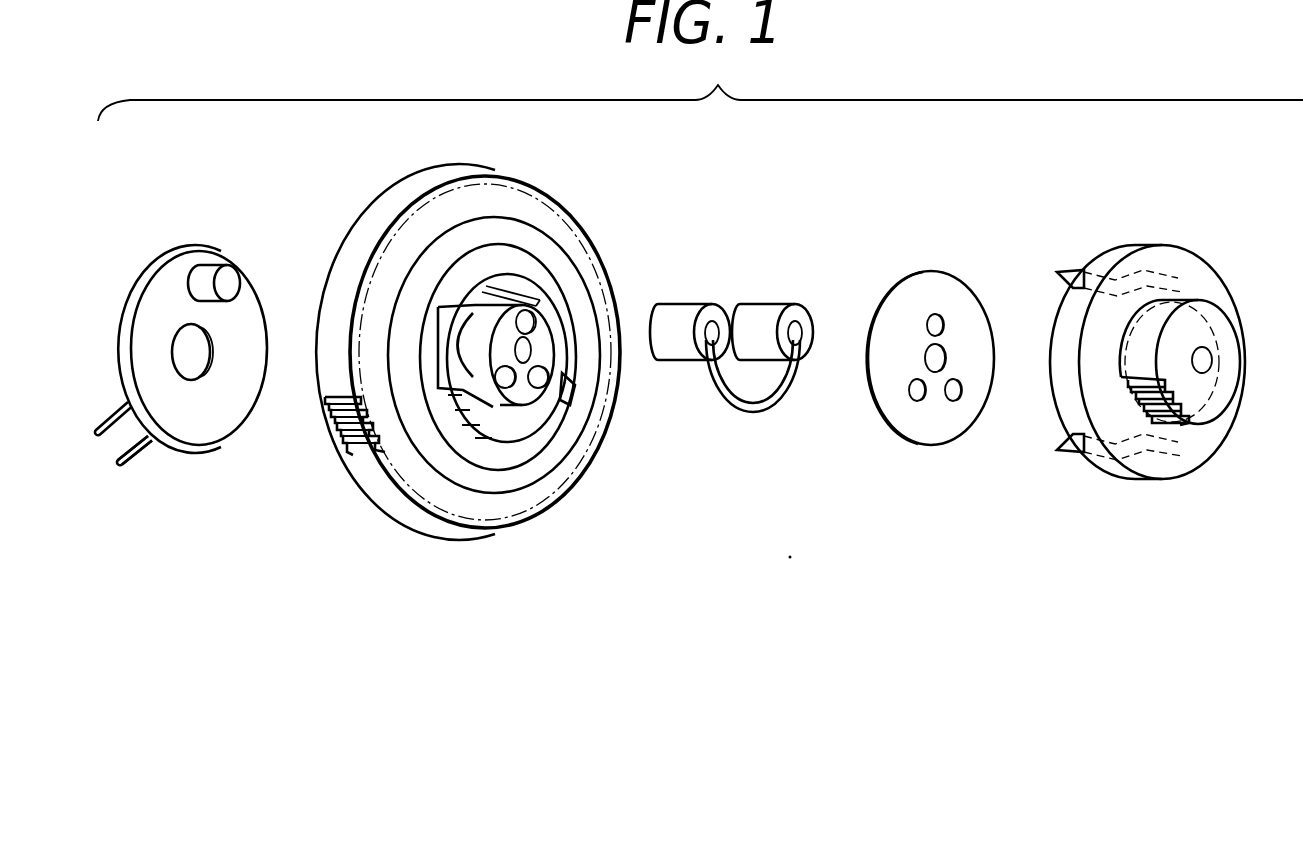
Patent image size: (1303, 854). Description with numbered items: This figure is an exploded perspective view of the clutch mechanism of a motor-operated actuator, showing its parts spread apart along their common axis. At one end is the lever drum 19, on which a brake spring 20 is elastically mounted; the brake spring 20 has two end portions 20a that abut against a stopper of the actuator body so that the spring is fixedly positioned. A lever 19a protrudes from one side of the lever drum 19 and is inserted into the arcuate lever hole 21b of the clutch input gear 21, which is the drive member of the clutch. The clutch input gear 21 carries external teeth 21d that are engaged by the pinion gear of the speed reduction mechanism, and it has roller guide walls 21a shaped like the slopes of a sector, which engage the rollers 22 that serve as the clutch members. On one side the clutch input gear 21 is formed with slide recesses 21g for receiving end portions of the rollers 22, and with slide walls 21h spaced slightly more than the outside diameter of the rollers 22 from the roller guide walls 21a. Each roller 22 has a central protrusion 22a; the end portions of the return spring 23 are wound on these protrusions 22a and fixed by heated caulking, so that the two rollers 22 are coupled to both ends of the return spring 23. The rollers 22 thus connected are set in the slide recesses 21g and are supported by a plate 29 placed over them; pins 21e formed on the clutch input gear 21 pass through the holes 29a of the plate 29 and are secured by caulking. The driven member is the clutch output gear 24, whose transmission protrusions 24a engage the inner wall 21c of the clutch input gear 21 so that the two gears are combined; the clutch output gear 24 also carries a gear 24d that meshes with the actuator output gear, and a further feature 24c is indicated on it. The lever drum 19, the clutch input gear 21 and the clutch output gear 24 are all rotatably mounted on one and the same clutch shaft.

The lever drum 19 is at (240, 402).
The lever 19a is at (228, 283).
The brake spring 20 is at (205, 447).
The end portions 20a is at (140, 462).
The clutch input gear 21 is at (486, 350).
The roller guide walls 21a is at (563, 375).
The lever hole 21b is at (483, 280).
The inner wall 21c is at (570, 275).
The external teeth 21d is at (338, 450).
The pins 21e is at (530, 320).
The slide recesses 21g is at (563, 354).
The slide walls 21h is at (534, 312).
The rollers 22 is at (750, 312).
The protrusion 22a is at (795, 330).
The return spring 23 is at (752, 412).
The clutch output gear 24 is at (1121, 368).
The transmission protrusions 24a is at (1078, 252).
The notch 24c is at (1065, 280).
The gear 24d is at (1165, 402).
The plate 29 is at (910, 282).
The holes 29a is at (940, 325).